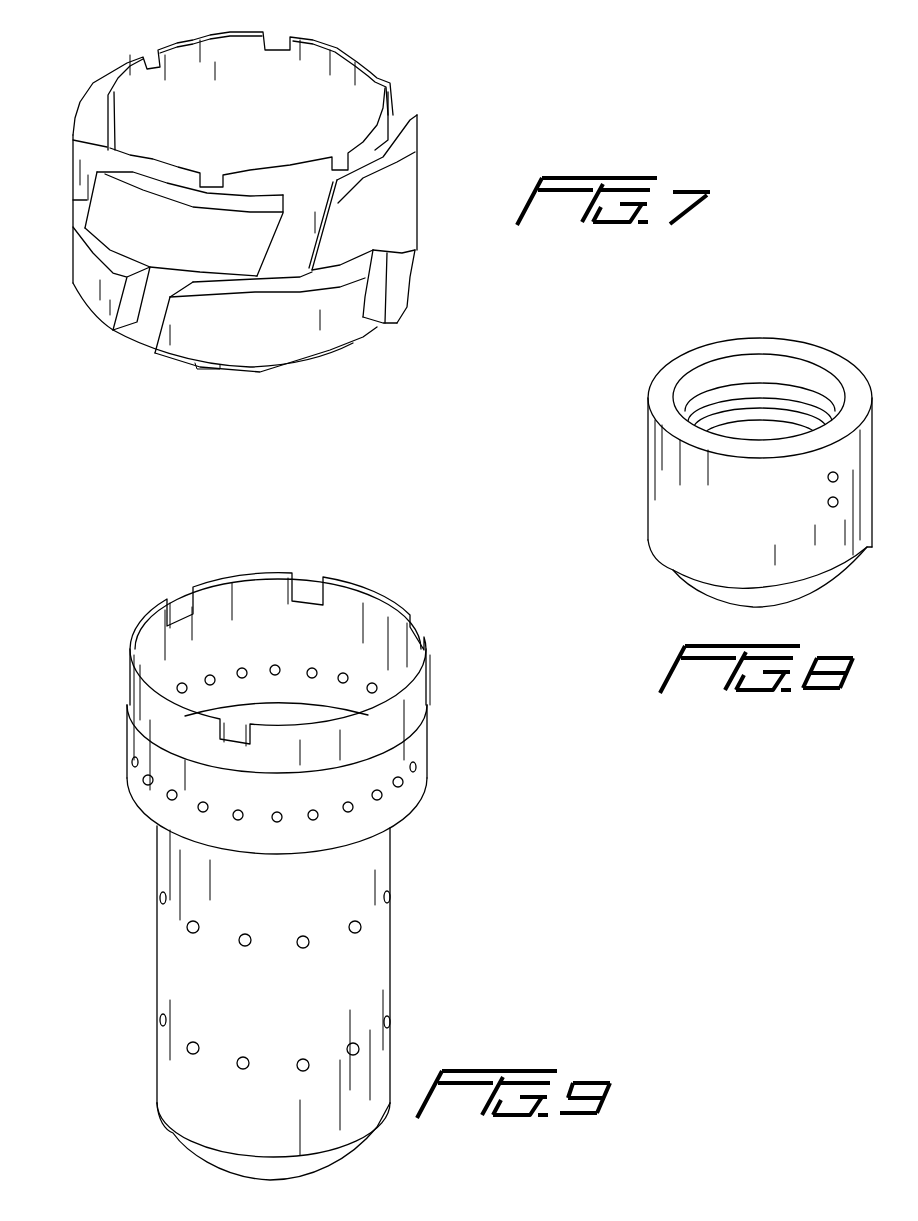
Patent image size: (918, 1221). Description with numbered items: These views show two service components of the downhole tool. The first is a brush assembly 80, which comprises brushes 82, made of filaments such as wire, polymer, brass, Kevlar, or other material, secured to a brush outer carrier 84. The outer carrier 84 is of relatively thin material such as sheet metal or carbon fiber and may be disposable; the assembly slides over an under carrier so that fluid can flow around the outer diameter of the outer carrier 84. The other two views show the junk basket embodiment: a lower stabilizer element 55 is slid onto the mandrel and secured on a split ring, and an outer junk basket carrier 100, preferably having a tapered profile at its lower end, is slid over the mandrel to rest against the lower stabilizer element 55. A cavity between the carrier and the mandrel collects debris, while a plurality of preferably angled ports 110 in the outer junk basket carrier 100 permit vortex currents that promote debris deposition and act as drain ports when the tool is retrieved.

In FIG. 8, the lower stabilizer element 55 is at (663, 528).
In FIG. 7, the brush assembly 80 is at (448, 277).
In FIG. 7, the brushes 82 is at (420, 177).
In FIG. 7, the brush outer carrier 84 is at (143, 332).
In FIG. 9, the outer junk basket carrier 100 is at (377, 948).
In FIG. 9, the ports 110 is at (187, 928).